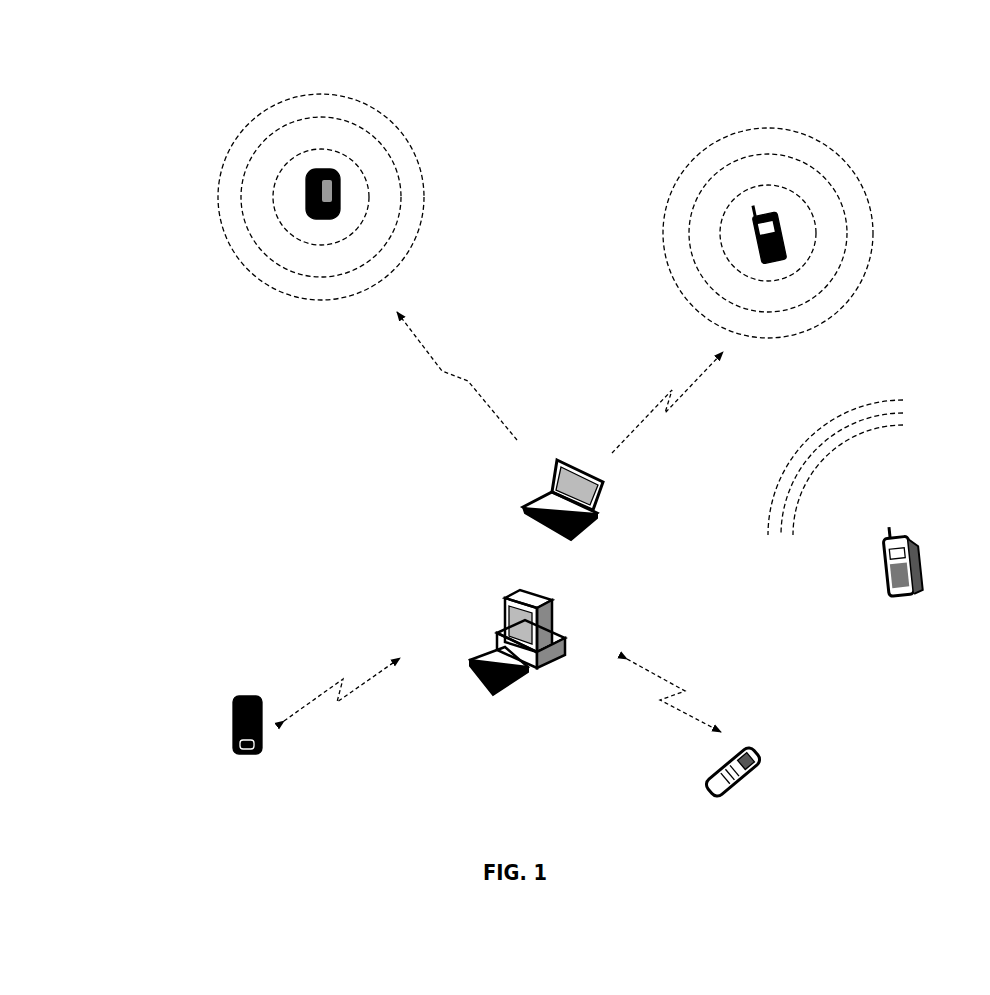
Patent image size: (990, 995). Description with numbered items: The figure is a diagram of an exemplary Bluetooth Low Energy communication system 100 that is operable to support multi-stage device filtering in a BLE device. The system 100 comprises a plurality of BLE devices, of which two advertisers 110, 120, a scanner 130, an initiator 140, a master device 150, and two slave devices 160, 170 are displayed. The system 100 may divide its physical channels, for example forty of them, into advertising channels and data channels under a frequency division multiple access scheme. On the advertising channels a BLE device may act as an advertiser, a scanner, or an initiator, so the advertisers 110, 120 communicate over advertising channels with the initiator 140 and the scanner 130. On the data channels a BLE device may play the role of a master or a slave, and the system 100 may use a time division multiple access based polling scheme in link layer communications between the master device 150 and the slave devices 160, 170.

The Bluetooth low energy communication system 100 is at (615, 97).
The advertiser 110 is at (403, 122).
The advertiser 120 is at (823, 140).
The scanner 130 is at (917, 547).
The initiator 140 is at (600, 502).
The master device 150 is at (540, 597).
The slave device 160 is at (202, 698).
The slave device 170 is at (745, 747).